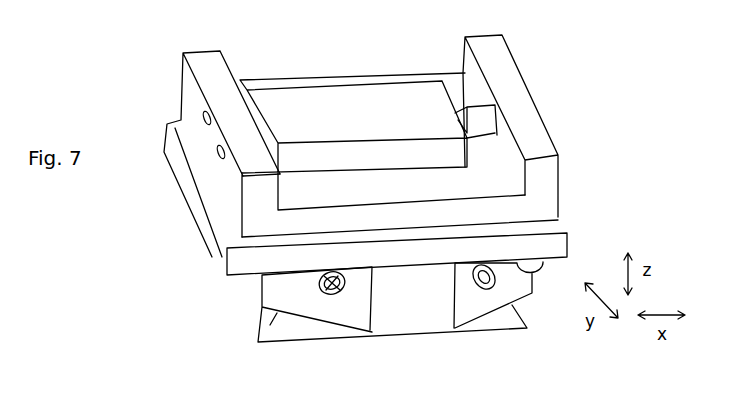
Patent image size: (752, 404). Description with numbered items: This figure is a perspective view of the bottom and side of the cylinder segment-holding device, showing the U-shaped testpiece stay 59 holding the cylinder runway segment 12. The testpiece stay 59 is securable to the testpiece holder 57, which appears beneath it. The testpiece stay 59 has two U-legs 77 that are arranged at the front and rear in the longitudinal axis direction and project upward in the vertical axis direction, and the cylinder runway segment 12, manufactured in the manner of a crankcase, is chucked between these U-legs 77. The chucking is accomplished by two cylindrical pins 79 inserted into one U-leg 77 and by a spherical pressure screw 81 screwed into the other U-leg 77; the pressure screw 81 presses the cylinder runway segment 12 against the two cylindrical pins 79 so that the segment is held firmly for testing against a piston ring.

The cylinder runway segment 12 is at (313, 117).
The testpiece holder 57 is at (383, 298).
The testpiece stay 59 is at (520, 124).
The U-legs 77 is at (222, 78).
The cylindrical pins 79 is at (256, 115).
The spherical pressure screw 81 is at (480, 117).